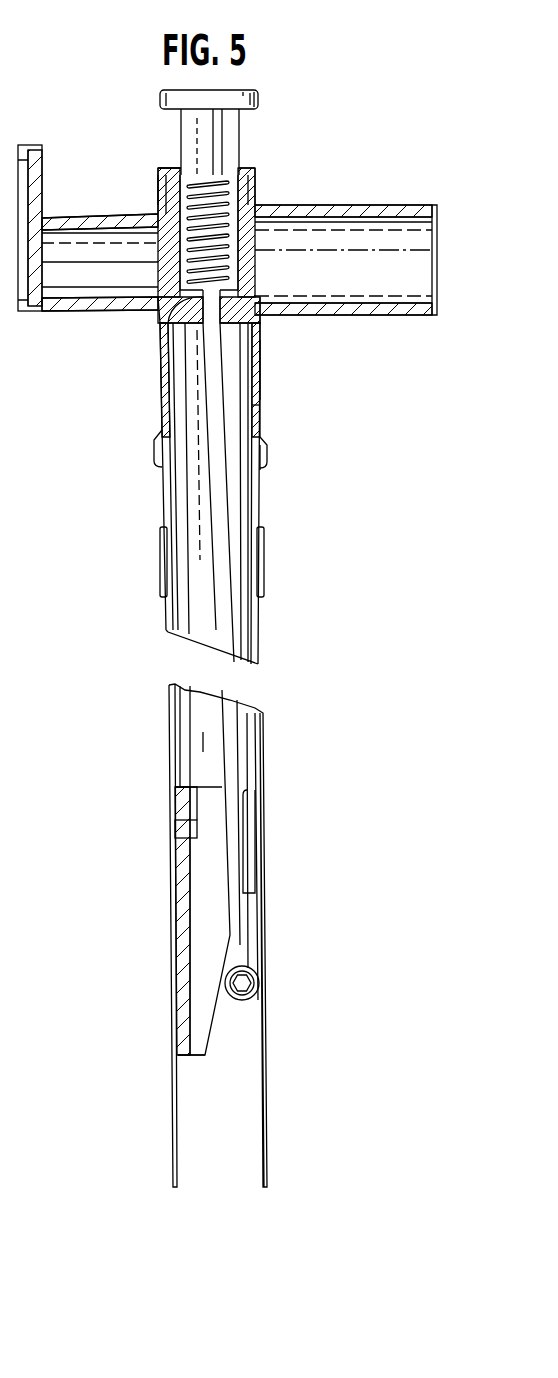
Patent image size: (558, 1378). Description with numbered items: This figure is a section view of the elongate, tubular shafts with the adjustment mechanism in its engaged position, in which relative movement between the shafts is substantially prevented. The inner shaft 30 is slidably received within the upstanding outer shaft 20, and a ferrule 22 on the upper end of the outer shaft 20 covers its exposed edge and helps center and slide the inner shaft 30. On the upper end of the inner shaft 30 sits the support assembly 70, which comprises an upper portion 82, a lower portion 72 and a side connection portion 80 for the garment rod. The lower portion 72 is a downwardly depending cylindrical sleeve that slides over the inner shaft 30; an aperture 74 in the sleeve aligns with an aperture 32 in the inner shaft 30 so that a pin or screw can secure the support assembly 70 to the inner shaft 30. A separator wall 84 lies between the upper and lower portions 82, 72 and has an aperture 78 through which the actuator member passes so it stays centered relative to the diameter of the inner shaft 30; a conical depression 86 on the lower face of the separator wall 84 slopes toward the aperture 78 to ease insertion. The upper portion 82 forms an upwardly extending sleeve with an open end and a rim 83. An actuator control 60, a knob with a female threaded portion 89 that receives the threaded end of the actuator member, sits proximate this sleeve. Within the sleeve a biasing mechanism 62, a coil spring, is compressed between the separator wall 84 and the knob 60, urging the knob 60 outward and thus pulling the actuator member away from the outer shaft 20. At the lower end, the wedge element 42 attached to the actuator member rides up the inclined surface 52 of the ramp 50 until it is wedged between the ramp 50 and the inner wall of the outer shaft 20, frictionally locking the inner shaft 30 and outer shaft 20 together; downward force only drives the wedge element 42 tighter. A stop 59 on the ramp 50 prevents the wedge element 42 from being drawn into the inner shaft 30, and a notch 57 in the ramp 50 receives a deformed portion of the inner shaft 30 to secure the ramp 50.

The actuator control 60 is at (152, 93).
The female threaded portion 89 is at (218, 154).
The support assembly 70 is at (266, 180).
The rim 83 is at (160, 168).
The upper portion 82 is at (158, 186).
The biasing mechanism 62 is at (230, 253).
The side connection portion 80 is at (345, 205).
The aperture 78 is at (165, 325).
The separator wall 84 is at (233, 322).
The inner shaft 30 is at (250, 498).
The conical depression 86 is at (262, 362).
The lower portion 72 is at (262, 417).
The aperture 32 is at (262, 430).
The aperture 74 is at (262, 462).
The ferrule 22 is at (264, 570).
The outer shaft 20 is at (262, 832).
The notch 57 is at (192, 815).
The stop 59 is at (255, 895).
The inclined surface 52 is at (210, 1028).
The ramp 50 is at (212, 1045).
The wedge element 42 is at (250, 1008).